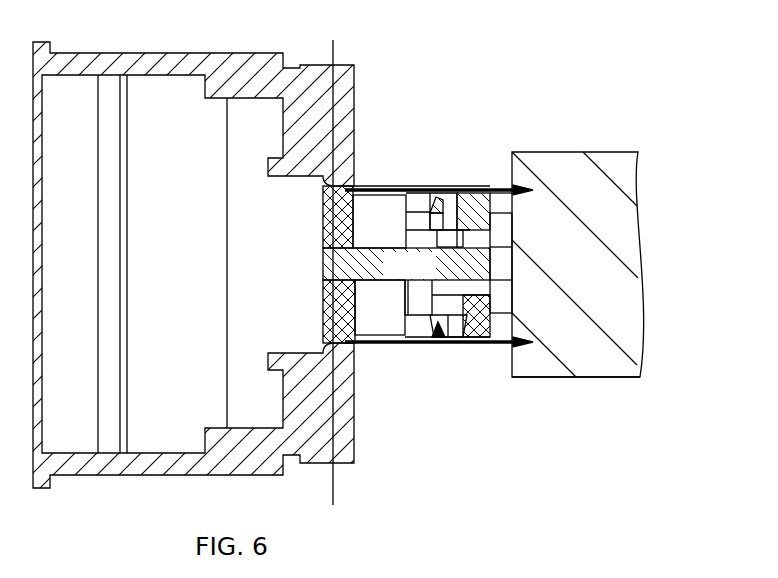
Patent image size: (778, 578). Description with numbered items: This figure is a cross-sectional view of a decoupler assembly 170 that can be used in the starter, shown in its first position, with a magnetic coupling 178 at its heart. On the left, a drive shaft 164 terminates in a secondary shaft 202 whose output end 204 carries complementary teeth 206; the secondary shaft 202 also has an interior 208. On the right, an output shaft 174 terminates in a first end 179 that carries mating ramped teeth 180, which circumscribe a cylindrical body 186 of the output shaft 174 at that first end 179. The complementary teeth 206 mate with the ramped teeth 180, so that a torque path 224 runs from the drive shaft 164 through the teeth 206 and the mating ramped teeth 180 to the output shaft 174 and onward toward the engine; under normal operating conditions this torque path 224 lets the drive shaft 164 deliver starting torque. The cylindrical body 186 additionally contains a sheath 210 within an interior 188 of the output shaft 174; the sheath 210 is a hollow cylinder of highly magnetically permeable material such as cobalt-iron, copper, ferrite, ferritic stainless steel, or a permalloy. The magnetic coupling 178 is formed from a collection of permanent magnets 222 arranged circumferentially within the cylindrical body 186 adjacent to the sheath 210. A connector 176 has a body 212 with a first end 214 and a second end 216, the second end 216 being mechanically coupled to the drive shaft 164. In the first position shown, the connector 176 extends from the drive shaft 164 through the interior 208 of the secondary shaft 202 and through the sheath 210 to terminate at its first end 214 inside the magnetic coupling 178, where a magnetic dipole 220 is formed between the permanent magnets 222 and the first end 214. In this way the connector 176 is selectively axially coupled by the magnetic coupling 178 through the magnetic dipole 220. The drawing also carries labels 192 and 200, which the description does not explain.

The drive shaft 164 is at (181, 52).
The decoupler assembly 170 is at (588, 90).
The output shaft 174 is at (593, 350).
The connector 176 is at (335, 224).
The magnetic coupling 178 is at (437, 343).
The first end 179 is at (450, 348).
The mating ramped teeth 180 is at (438, 348).
The cylindrical body 186 is at (496, 202).
The interior 188 is at (500, 297).
The thrust plate 192 is at (440, 227).
The bearing assembly 200 is at (440, 105).
The secondary shaft 202 is at (378, 186).
The output end 204 is at (456, 186).
The complementary teeth 206 is at (420, 336).
The interior 208 is at (383, 320).
The sheath 210 is at (464, 213).
The body 212 is at (433, 278).
The first end 214 is at (494, 255).
The second end 216 is at (320, 266).
The magnetic dipole 220 is at (505, 236).
The permanent magnets 222 is at (484, 195).
The torque path 224 is at (500, 186).